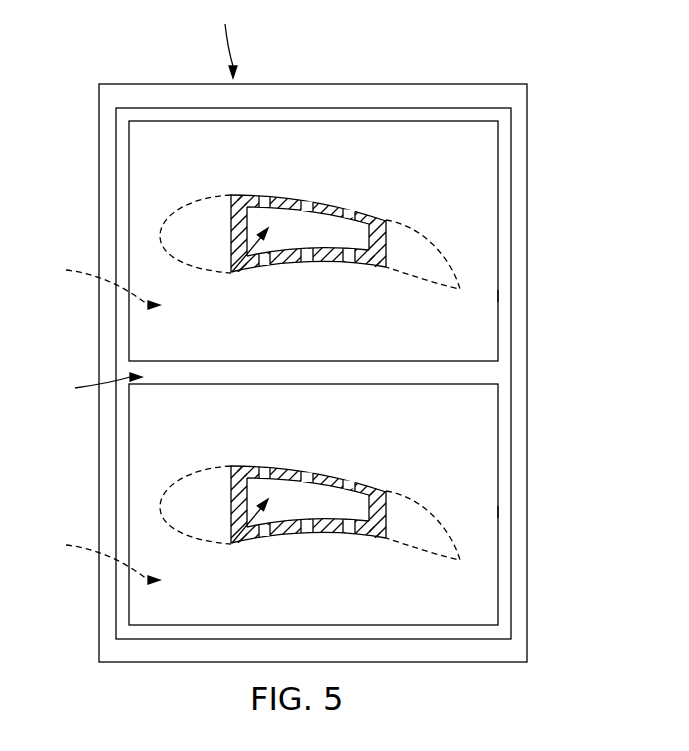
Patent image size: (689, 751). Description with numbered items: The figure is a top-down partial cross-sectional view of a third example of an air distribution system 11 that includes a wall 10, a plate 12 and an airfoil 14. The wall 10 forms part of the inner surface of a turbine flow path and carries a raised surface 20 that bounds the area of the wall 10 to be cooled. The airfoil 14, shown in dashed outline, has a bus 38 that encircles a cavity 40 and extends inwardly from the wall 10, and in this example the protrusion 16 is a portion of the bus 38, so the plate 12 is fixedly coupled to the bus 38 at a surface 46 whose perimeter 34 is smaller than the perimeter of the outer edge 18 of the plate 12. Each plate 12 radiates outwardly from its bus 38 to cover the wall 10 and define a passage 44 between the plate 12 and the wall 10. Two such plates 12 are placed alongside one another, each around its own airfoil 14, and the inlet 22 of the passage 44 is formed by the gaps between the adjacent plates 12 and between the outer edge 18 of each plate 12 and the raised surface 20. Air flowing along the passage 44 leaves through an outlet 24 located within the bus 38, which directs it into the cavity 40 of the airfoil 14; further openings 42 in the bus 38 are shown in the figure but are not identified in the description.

The wall 10 is at (497, 80).
The air distribution system 11 is at (222, 40).
The plate 12 is at (150, 137).
The airfoil 14 is at (160, 236).
The protrusion 16 is at (380, 218).
The outer edge 18 is at (498, 296).
The raised surface 20 is at (352, 90).
The inlet 22 is at (94, 385).
The outlet 24 is at (307, 190).
The perimeter 34 is at (253, 272).
The bus 38 is at (237, 195).
The cavity 40 is at (232, 272).
The film cooling holes 42 is at (350, 196).
The passage 44 is at (98, 421).
The surface 46 is at (318, 207).